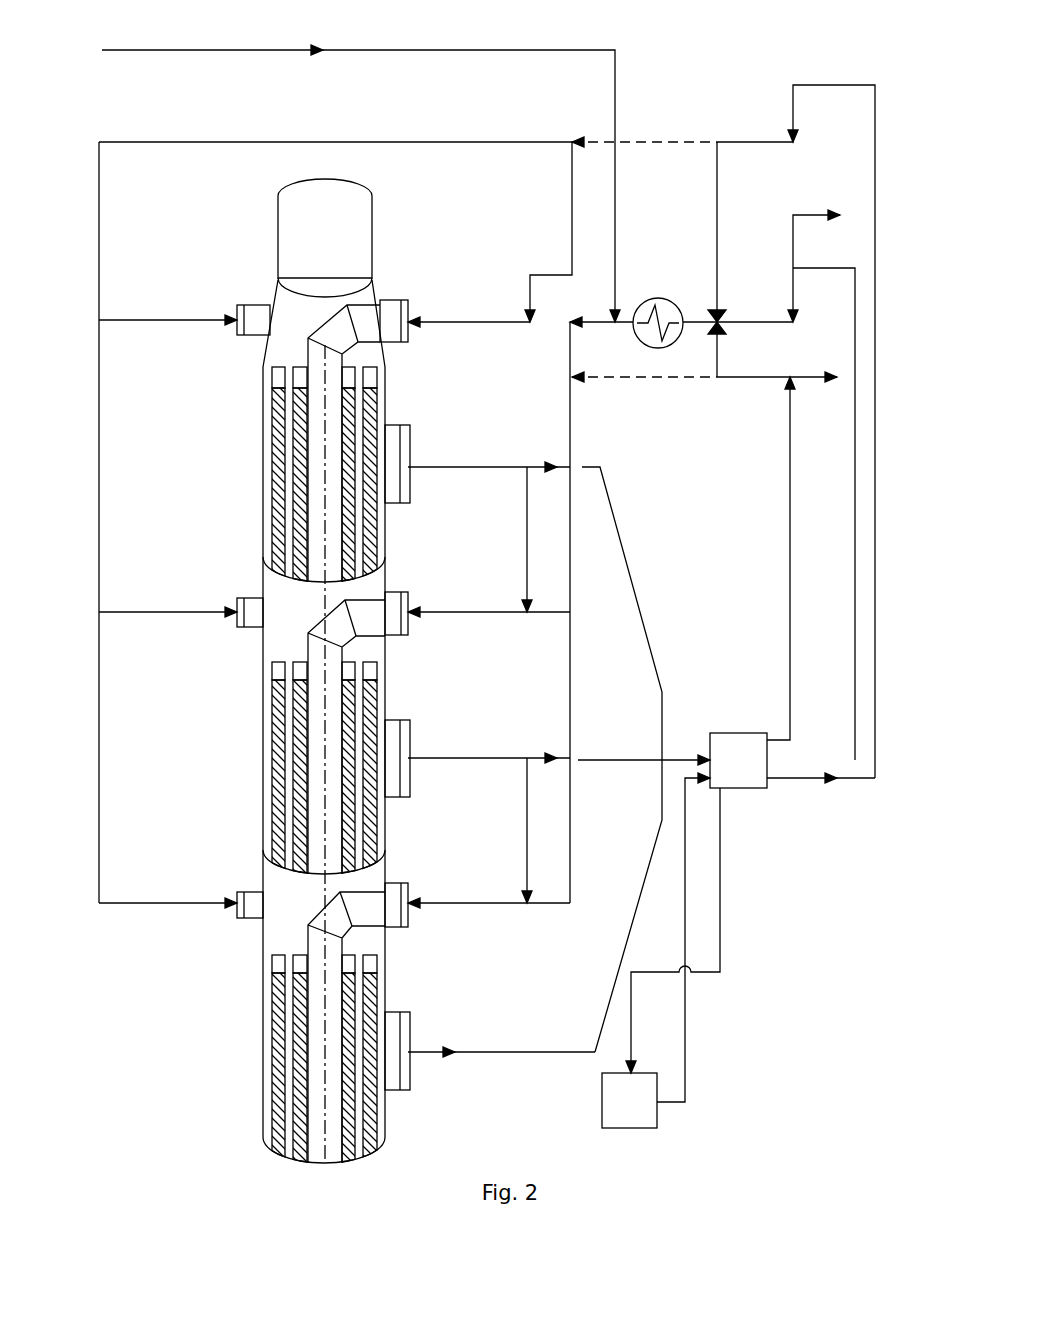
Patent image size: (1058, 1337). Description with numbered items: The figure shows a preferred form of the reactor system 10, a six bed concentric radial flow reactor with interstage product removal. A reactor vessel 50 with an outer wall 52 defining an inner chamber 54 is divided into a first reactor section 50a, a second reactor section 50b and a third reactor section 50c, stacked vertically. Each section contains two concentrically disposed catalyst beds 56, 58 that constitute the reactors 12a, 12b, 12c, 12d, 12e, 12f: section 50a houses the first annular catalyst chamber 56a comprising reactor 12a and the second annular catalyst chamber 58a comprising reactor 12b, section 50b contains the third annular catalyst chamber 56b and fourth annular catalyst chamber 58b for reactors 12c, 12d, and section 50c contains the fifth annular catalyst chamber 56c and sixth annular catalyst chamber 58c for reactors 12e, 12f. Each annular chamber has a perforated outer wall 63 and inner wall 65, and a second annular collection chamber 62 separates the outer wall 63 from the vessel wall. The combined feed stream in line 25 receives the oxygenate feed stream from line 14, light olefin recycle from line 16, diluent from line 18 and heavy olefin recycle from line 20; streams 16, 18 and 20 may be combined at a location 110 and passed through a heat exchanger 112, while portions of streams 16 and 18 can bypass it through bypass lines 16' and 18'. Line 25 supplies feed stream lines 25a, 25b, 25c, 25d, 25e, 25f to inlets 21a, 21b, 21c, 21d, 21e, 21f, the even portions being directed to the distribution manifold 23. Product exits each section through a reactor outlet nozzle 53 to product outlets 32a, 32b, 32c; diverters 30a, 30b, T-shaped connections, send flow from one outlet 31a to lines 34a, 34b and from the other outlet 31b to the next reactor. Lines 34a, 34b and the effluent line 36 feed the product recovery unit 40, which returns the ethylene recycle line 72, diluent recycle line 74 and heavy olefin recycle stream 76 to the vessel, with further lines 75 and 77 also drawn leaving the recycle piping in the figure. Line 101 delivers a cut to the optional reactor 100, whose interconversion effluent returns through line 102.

The reactor system 10 is at (720, 82).
The oxygenate feed line 14 is at (150, 50).
The light olefin recycle feed line 16 is at (796, 431).
The bypass line 16' is at (635, 117).
The diluent feed line 18 is at (740, 279).
The bypass line 18' is at (644, 394).
The heavy olefin recycle feed line 20 is at (768, 318).
The first inlet 21a is at (395, 298).
The second inlet 21b is at (248, 305).
The third inlet 21c is at (400, 592).
The fourth inlet 21d is at (240, 598).
The fifth inlet 21e is at (400, 883).
The sixth inlet 21f is at (238, 893).
The distribution manifold 23 is at (290, 292).
The combined feed stream line 25 is at (100, 215).
The first feed stream line 25a is at (448, 318).
The second feed stream line 25b is at (138, 318).
The third feed stream line 25c is at (470, 613).
The fourth feed stream line 25d is at (150, 613).
The fifth feed stream line 25e is at (455, 905).
The sixth feed stream line 25f is at (180, 905).
The first reactor 12a is at (310, 388).
The second reactor 12b is at (297, 395).
The third reactor 12c is at (345, 690).
The fourth reactor 12d is at (362, 698).
The fifth reactor 12e is at (357, 985).
The sixth reactor 12f is at (372, 1005).
The first diverter 30a is at (485, 440).
The second diverter 30b is at (470, 725).
The diverter outlet 31a is at (535, 465).
The diverter outlet 31b is at (527, 528).
The first product outlet 32a is at (442, 465).
The second product outlet 32b is at (440, 758).
The third product outlet 32c is at (480, 1052).
The interstage product removal line 34a is at (598, 467).
The interstage product removal line 34b is at (612, 758).
The effluent line 36 is at (680, 758).
The product recovery unit 40 is at (740, 722).
The reactor vessel 50 is at (205, 488).
The first reactor section 50a is at (250, 415).
The second reactor section 50b is at (243, 715).
The third reactor section 50c is at (240, 1040).
The outer wall 52 is at (265, 460).
The reactor outlet nozzle 53 is at (400, 425).
The inner chamber 54 is at (330, 505).
The catalyst bed 56 is at (380, 1133).
The first annular catalyst chamber 56a is at (300, 437).
The third annular catalyst chamber 56b is at (295, 790).
The fifth annular catalyst chamber 56c is at (300, 990).
The catalyst bed 58 is at (348, 1160).
The second annular catalyst chamber 58a is at (278, 515).
The fourth annular catalyst chamber 58b is at (280, 815).
The sixth annular catalyst chamber 58c is at (290, 1003).
The second annular collection chamber 62 is at (265, 1090).
The outer wall 63 is at (258, 1140).
The inner wall 65 is at (300, 1160).
The ethylene recycle line 72 is at (818, 778).
The diluent recycle line 74 is at (790, 640).
The line 75 is at (815, 377).
The heavy olefin recycle stream 76 is at (852, 703).
The line 77 is at (822, 213).
The reactor 100 is at (625, 1128).
The line 101 is at (635, 1040).
The line 102 is at (688, 1010).
The combining location 110 is at (710, 302).
The heat exchanger 112 is at (660, 298).